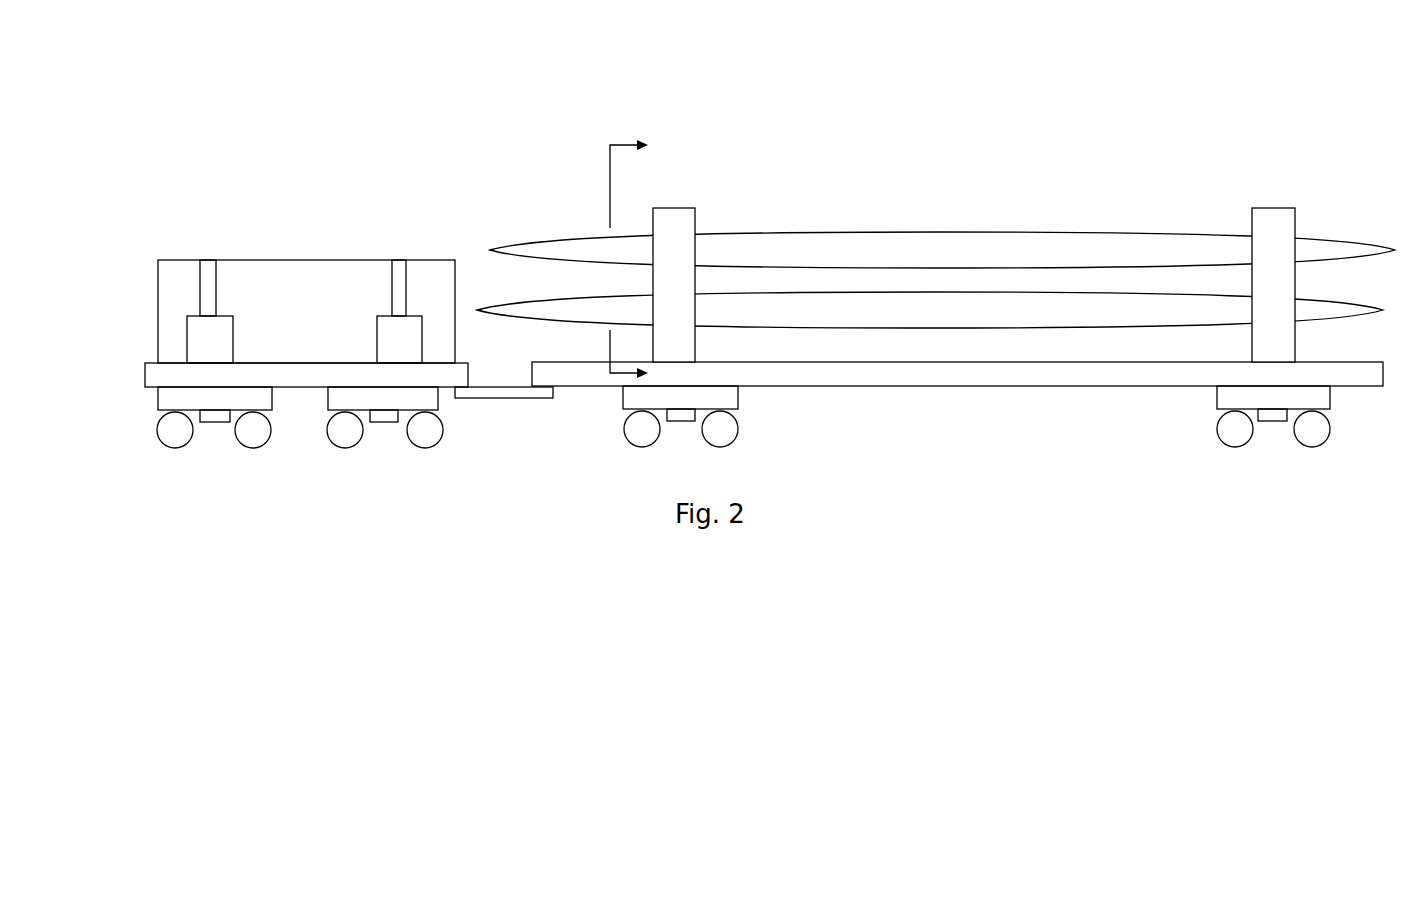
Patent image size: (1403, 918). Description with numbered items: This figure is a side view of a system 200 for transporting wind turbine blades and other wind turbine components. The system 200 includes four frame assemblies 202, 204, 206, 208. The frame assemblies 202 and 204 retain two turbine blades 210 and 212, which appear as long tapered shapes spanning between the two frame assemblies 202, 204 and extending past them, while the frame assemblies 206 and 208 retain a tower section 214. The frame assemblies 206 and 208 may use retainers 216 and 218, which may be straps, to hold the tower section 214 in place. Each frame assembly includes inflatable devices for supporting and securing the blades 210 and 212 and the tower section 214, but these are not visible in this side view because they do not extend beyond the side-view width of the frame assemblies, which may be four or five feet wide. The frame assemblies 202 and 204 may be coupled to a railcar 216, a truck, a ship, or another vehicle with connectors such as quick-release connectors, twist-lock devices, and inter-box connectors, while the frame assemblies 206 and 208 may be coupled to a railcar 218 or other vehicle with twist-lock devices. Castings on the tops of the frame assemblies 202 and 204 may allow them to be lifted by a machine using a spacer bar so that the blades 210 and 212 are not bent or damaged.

The system 200 is at (686, 82).
The frame assembly 202 is at (683, 217).
The frame assembly 204 is at (1261, 215).
The frame assembly 206 is at (210, 341).
The frame assembly 208 is at (398, 330).
The turbine blade 210 is at (555, 245).
The turbine blade 212 is at (540, 315).
The tower section 214 is at (300, 275).
The railcar 216 is at (207, 258).
The railcar 218 is at (399, 258).